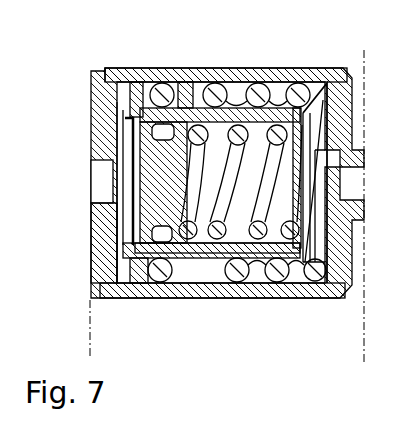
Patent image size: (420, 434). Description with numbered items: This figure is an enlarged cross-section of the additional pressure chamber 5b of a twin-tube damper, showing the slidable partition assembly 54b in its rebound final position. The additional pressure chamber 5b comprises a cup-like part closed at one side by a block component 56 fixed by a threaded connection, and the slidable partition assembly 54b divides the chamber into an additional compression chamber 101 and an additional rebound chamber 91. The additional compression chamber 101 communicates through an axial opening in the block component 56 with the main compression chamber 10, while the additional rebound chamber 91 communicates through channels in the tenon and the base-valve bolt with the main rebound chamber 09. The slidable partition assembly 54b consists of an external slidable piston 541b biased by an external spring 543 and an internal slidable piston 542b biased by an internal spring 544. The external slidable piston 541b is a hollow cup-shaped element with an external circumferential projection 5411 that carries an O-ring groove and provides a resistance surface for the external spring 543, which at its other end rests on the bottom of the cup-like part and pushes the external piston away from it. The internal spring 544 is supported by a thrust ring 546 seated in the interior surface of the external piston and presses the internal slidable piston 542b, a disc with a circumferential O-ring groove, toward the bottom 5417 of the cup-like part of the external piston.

The additional pressure chamber 5b is at (70, 104).
The external circumferential projection 5411 is at (132, 80).
The external slidable piston 541b is at (183, 80).
The internal spring 544 is at (242, 122).
The bottom of the cup-like part 5417 is at (326, 82).
The thrust ring 546 is at (131, 130).
The block component 56 is at (103, 250).
The internal slidable piston 542b is at (162, 260).
The slidable partition assembly 54b is at (219, 266).
The external spring 543 is at (285, 292).
The main compression chamber 10 is at (77, 329).
The additional compression chamber 101 is at (106, 347).
The additional rebound chamber 91 is at (353, 206).
The main rebound chamber 09 is at (381, 347).